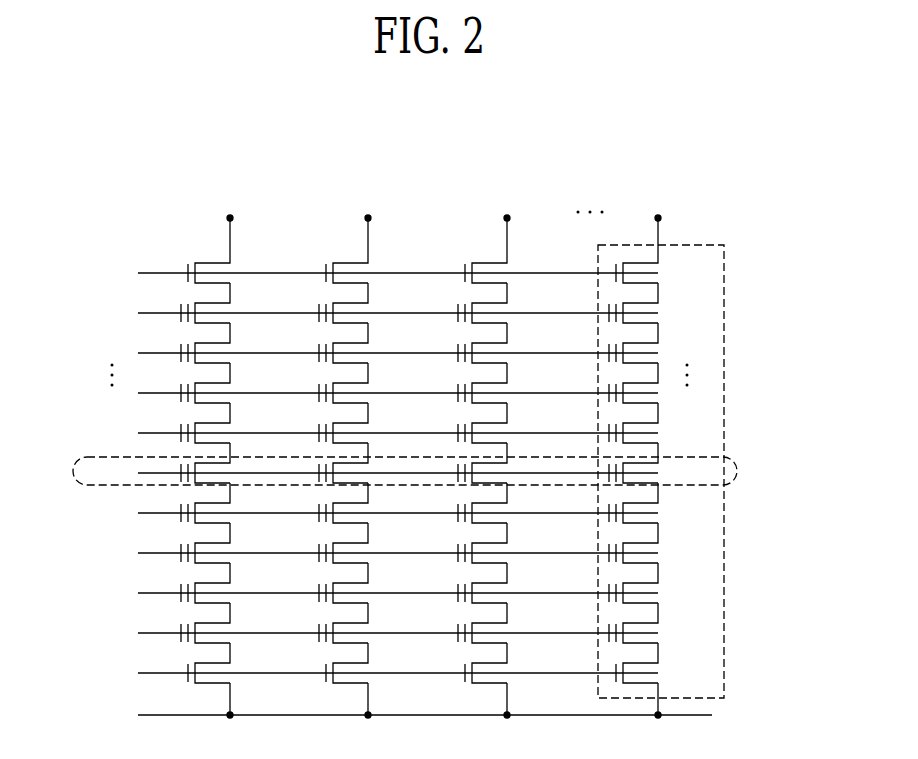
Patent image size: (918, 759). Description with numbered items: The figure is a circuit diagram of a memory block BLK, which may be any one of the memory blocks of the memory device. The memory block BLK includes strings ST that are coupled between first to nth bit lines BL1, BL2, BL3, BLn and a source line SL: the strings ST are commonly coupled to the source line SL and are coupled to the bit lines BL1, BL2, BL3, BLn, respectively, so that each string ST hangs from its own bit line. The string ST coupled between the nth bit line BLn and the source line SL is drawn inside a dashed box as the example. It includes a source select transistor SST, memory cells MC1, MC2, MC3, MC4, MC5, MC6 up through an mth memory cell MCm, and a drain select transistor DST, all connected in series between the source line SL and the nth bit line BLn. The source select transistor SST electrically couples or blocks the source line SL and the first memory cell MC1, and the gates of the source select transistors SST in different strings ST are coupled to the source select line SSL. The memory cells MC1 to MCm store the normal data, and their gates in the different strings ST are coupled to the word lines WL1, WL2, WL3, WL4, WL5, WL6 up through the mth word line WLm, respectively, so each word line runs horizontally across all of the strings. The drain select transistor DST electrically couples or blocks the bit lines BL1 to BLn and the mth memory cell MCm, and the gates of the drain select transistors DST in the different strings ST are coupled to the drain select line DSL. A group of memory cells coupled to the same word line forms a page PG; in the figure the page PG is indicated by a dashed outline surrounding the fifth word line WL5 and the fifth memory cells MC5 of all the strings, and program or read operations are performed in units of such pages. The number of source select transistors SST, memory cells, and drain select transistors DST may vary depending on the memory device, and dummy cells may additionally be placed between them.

The memory block BLK is at (724, 151).
The first bit line BL1 is at (213, 237).
The second bit line BL2 is at (351, 237).
The third bit line BL3 is at (490, 237).
The nth bit line BLn is at (643, 235).
The string ST is at (712, 244).
The drain select transistor DST is at (658, 266).
The mth memory cell MCm is at (658, 307).
The sixth memory cell MC6 is at (657, 426).
The fifth memory cell MC5 is at (657, 466).
The fourth memory cell MC4 is at (657, 506).
The third memory cell MC3 is at (657, 546).
The second memory cell MC2 is at (657, 586).
The first memory cell MC1 is at (656, 626).
The source select transistor SST is at (658, 666).
The drain select line DSL is at (377, 273).
The mth word line WLm is at (374, 313).
The sixth word line WL6 is at (378, 433).
The fifth word line WL5 is at (378, 473).
The fourth word line WL4 is at (378, 513).
The third word line WL3 is at (378, 553).
The second word line WL2 is at (378, 593).
The first word line WL1 is at (379, 633).
The source select line SSL is at (379, 672).
The source line SL is at (410, 715).
The page PG is at (738, 473).